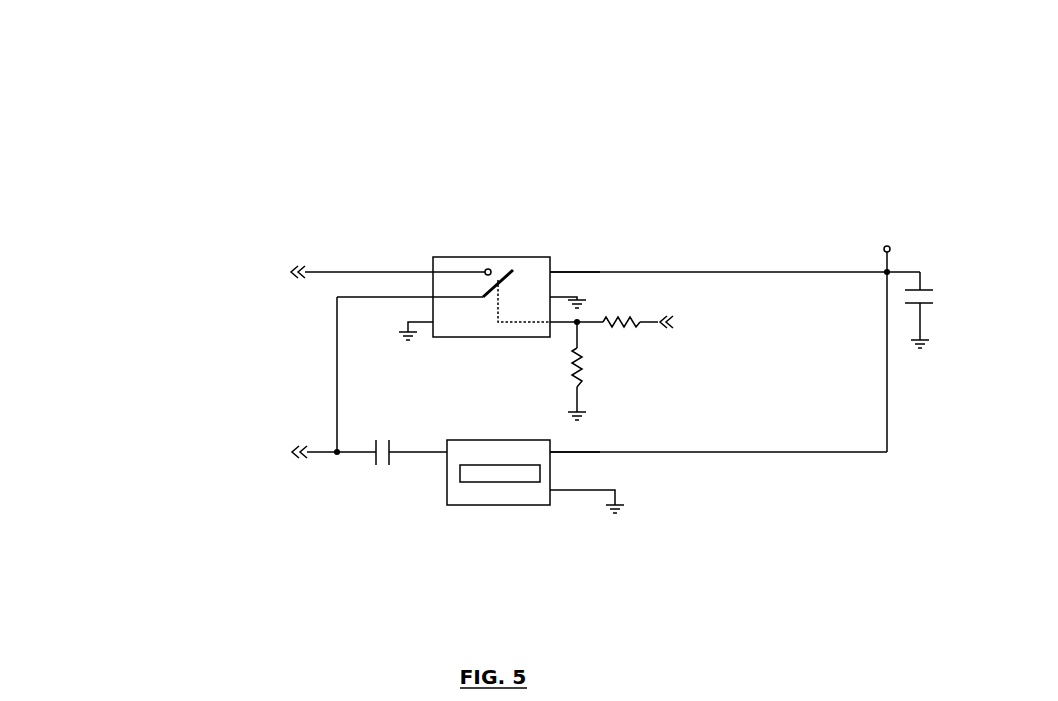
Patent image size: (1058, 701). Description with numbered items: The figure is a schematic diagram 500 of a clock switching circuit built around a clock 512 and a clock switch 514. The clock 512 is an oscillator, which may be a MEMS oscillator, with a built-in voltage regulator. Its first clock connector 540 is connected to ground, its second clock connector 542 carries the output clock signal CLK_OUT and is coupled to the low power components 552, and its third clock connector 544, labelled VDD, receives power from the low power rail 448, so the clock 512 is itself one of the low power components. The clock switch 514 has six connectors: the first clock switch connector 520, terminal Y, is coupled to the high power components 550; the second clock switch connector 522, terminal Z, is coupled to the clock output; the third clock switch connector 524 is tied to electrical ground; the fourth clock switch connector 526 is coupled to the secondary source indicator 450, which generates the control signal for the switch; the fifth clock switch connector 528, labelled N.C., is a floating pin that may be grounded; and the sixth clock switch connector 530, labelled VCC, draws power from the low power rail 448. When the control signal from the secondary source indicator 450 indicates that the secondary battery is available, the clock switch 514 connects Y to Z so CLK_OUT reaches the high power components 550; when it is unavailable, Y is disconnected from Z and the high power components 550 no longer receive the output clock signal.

The schematic diagram 500 is at (805, 72).
The low power rail 448 is at (855, 220).
The secondary source indicator 450 is at (697, 333).
The clock 512 is at (538, 506).
The clock switch 514 is at (475, 358).
The first clock switch connector 520 is at (418, 258).
The second clock switch connector 522 is at (417, 292).
The third clock switch connector 524 is at (415, 315).
The fourth clock switch connector 526 is at (558, 326).
The fifth clock switch connector 528 is at (565, 285).
The sixth clock switch connector 530 is at (560, 258).
The first clock connector 540 is at (568, 482).
The second clock connector 542 is at (430, 447).
The third clock connector 544 is at (568, 445).
The high power components 550 is at (213, 260).
The low power components 552 is at (170, 465).